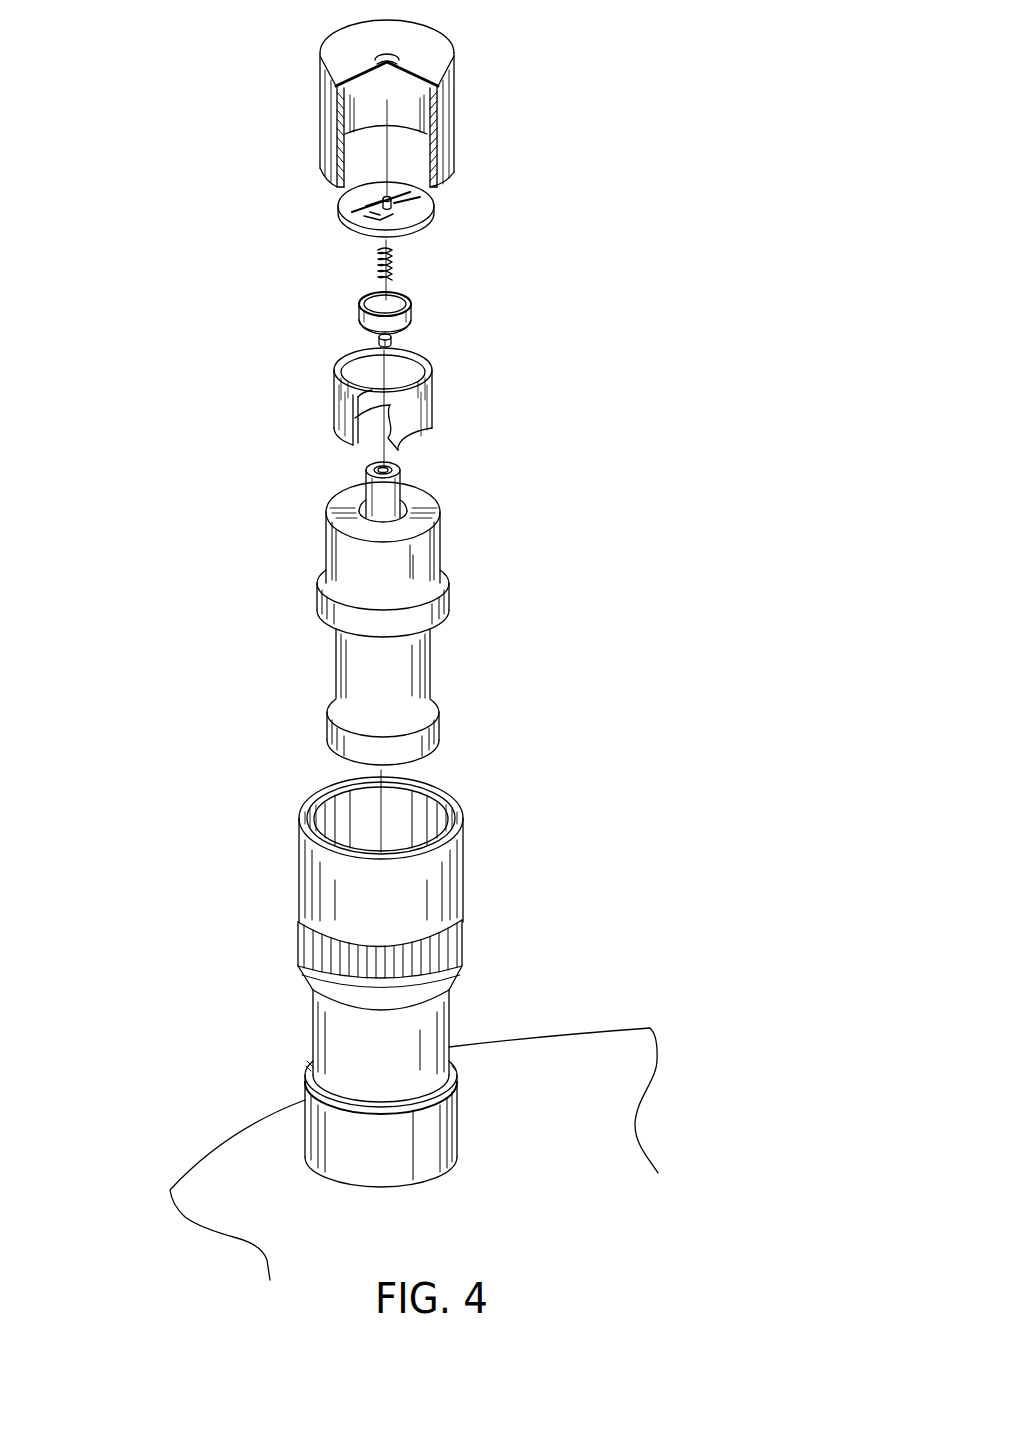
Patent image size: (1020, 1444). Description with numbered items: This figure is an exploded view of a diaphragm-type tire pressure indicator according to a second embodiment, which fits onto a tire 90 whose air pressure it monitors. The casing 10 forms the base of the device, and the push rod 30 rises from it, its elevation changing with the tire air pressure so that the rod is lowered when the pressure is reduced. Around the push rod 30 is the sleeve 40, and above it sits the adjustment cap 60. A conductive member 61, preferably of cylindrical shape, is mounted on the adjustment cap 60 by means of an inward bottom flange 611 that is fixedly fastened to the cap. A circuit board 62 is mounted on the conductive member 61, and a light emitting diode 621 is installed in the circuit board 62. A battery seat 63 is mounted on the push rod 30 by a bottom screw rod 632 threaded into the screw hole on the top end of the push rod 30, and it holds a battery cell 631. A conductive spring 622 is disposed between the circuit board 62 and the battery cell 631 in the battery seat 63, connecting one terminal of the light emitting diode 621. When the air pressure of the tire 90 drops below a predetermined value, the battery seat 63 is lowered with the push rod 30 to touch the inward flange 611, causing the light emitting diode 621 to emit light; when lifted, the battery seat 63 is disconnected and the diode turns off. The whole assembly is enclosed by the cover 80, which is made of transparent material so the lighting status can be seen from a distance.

The casing 10 is at (492, 858).
The push rod 30 is at (403, 478).
The sleeve 40 is at (456, 660).
The adjustment cap 60 is at (442, 545).
The conductive member 61 is at (379, 416).
The inward bottom flange 611 is at (358, 448).
The circuit board 62 is at (434, 218).
The light emitting diode 621 is at (380, 205).
The conductive spring 622 is at (378, 265).
The battery seat 63 is at (428, 289).
The battery cell 631 is at (398, 294).
The bottom screw rod 632 is at (394, 339).
The cover 80 is at (447, 47).
The tire 90 is at (561, 1045).